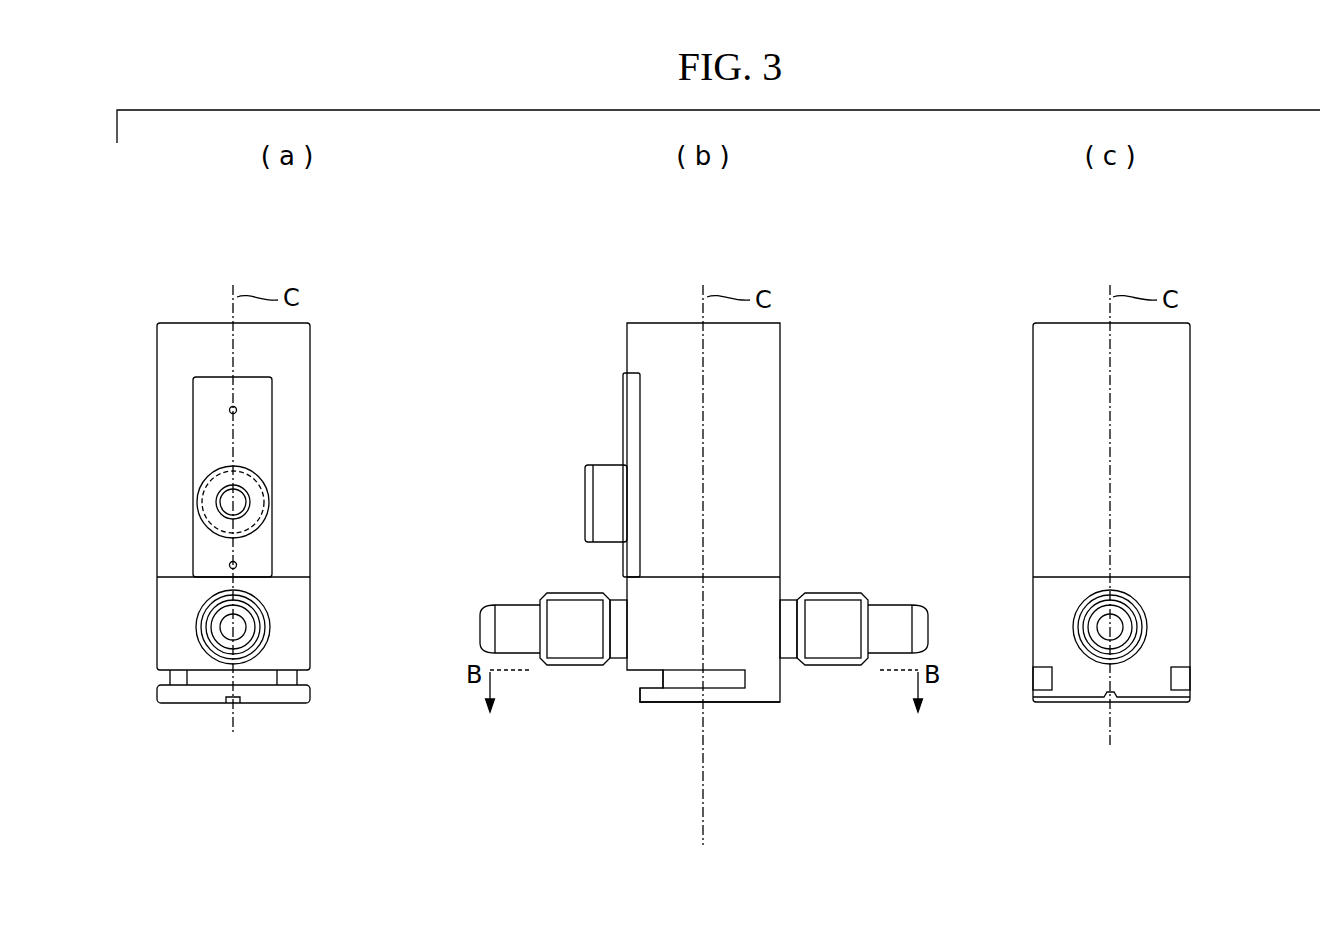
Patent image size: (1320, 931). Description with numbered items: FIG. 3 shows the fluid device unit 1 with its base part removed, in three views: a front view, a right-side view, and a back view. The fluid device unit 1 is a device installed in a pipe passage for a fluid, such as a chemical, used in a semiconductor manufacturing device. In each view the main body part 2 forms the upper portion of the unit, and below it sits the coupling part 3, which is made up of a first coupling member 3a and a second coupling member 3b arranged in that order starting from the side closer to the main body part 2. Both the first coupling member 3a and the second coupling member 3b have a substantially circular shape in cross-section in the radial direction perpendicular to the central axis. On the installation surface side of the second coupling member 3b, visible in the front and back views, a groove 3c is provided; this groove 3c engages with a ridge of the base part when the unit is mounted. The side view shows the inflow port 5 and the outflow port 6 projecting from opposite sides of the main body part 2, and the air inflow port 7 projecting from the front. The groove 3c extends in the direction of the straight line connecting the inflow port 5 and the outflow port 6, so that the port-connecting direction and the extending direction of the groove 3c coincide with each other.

The fluid device unit 1 is at (322, 262).
The main body part 2 is at (329, 568).
The coupling part 3 is at (380, 660).
The first coupling member 3a is at (275, 678).
The second coupling member 3b is at (285, 703).
The groove 3c is at (233, 703).
The inflow port 5 is at (258, 620).
The outflow port 6 is at (890, 602).
The air inflow port 7 is at (250, 500).